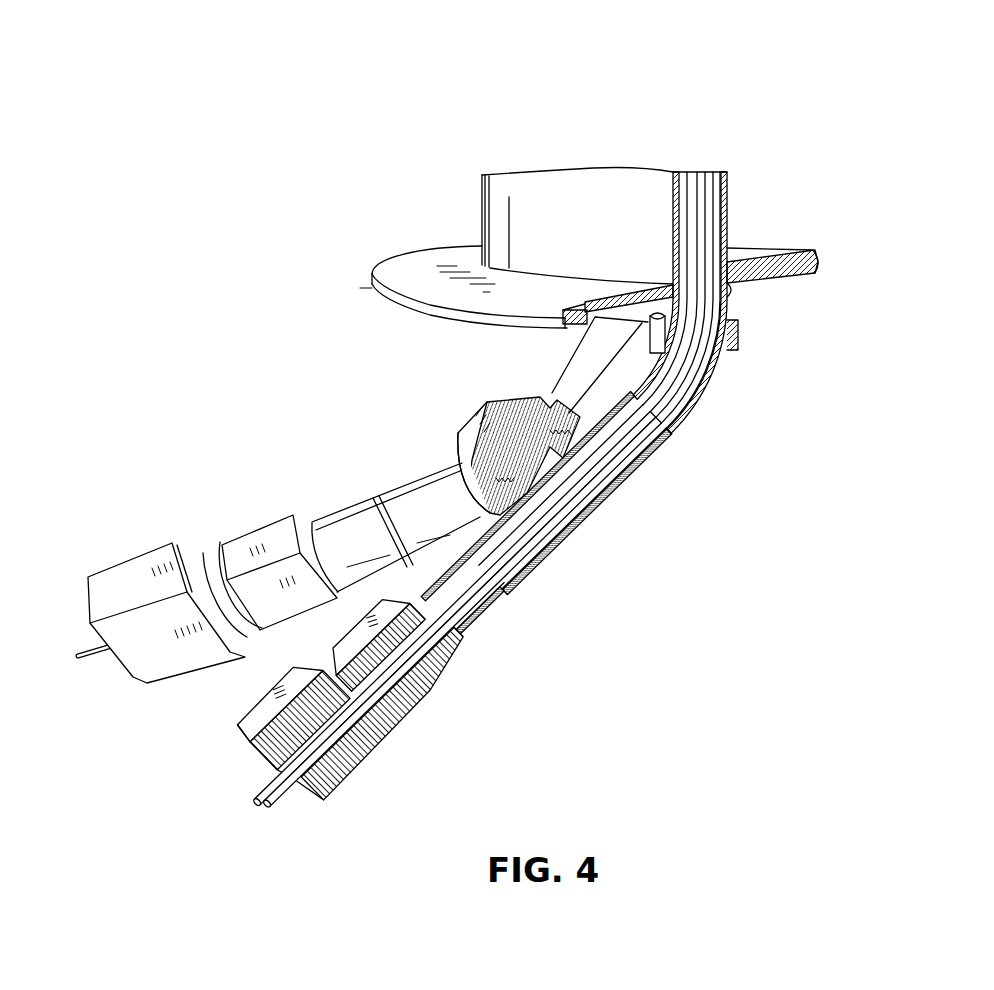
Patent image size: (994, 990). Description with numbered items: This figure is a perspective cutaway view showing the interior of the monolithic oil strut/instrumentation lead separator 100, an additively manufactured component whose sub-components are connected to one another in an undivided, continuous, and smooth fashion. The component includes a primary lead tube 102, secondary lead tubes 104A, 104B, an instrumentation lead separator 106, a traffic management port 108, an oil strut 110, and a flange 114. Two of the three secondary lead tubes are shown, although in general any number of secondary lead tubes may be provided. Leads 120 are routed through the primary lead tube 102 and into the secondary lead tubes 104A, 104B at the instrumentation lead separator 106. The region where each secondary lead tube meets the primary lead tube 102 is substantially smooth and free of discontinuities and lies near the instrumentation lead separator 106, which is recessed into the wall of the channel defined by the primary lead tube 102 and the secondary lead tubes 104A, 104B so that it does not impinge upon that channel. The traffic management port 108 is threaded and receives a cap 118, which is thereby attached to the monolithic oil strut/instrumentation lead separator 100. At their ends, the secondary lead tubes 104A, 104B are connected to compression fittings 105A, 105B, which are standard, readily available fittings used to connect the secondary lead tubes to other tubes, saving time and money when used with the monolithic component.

The monolithic oil strut/instrumentation lead separator 100 is at (445, 428).
The primary lead tube 102 is at (683, 180).
The secondary lead tube 104A is at (338, 543).
The secondary lead tube 104B is at (500, 592).
The compression fitting 105A is at (152, 633).
The compression fitting 105B is at (355, 742).
The instrumentation lead separator 106 is at (680, 500).
The traffic management port 108 is at (560, 495).
The oil strut 110 is at (480, 200).
The flange 114 is at (372, 290).
The cap 118 is at (462, 432).
The leads 120 is at (78, 640).